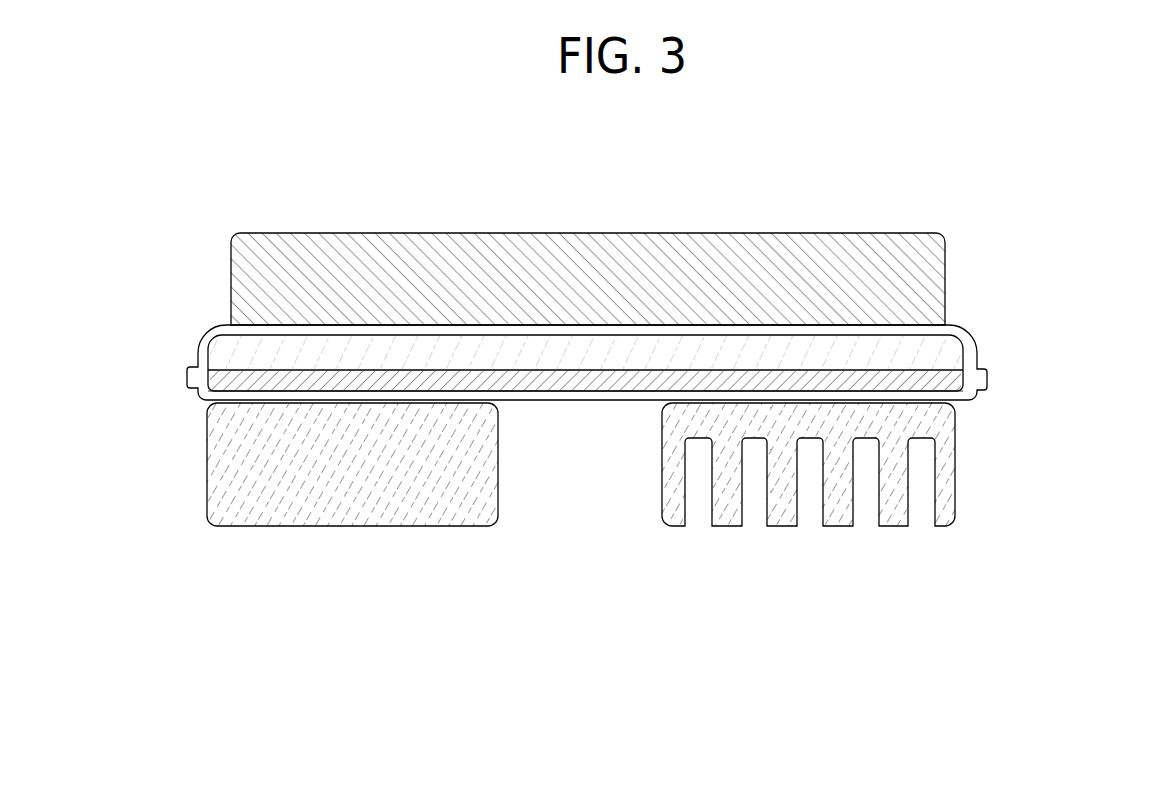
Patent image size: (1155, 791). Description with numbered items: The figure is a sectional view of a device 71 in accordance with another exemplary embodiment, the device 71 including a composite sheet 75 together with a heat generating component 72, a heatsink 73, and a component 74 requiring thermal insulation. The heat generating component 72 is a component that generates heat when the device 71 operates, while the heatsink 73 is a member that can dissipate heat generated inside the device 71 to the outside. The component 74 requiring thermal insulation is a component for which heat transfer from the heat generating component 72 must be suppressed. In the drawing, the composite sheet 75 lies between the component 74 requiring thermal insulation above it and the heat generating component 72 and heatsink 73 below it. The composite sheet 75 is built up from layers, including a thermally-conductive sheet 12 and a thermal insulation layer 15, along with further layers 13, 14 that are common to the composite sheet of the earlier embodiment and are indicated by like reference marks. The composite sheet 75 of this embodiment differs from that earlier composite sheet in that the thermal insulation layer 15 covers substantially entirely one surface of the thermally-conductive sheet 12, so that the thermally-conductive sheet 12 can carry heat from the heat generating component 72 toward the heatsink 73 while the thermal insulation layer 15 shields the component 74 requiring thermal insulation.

The device 71 is at (910, 203).
The heat generating component 72 is at (343, 505).
The heatsink 73 is at (948, 497).
The component requiring thermal insulation 74 is at (607, 237).
The composite sheet 75 is at (1097, 262).
The thermally-conductive sheet 12 is at (965, 403).
The insulating layer 13 is at (975, 356).
The heating element 14 is at (983, 391).
The thermal insulation layer 15 is at (965, 324).